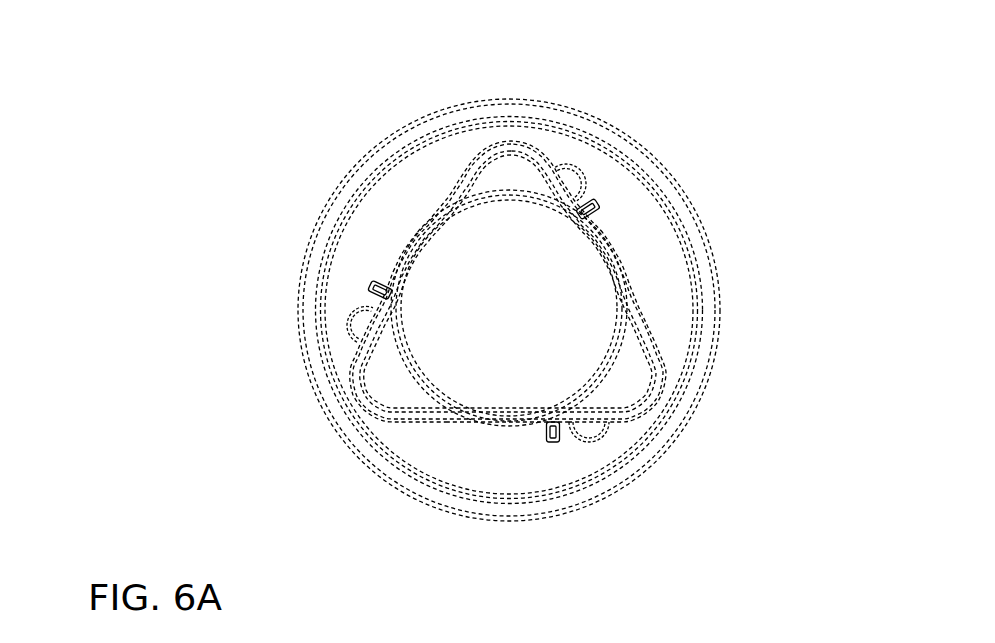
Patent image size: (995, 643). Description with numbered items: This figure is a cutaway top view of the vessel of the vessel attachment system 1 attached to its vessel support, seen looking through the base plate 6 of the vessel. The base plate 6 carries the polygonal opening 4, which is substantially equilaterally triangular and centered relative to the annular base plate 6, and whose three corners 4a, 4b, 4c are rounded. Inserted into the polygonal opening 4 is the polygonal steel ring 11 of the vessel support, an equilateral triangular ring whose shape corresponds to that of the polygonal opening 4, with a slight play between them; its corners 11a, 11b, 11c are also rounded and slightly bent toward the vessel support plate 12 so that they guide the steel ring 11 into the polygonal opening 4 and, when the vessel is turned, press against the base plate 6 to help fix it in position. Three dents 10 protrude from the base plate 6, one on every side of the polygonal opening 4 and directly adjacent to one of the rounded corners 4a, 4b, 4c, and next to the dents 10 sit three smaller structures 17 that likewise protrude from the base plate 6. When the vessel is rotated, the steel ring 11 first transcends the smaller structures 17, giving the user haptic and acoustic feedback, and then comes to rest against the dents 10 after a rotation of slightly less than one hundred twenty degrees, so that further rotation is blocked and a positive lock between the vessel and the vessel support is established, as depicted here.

The vessel attachment system 1 is at (752, 375).
The polygonal opening 4 is at (498, 266).
The corner of the polygonal opening 4a is at (510, 140).
The corner of the polygonal opening 4b is at (335, 340).
The corner of the polygonal opening 4c is at (669, 359).
The base plate 6 is at (384, 242).
The dent 10 is at (578, 179).
The polygonal steel ring 11 is at (640, 318).
The corner of the steel ring 11a is at (513, 147).
The corner of the steel ring 11b is at (365, 402).
The corner of the steel ring 11c is at (652, 393).
The vessel support plate 12 is at (402, 386).
The structure 17 is at (600, 202).